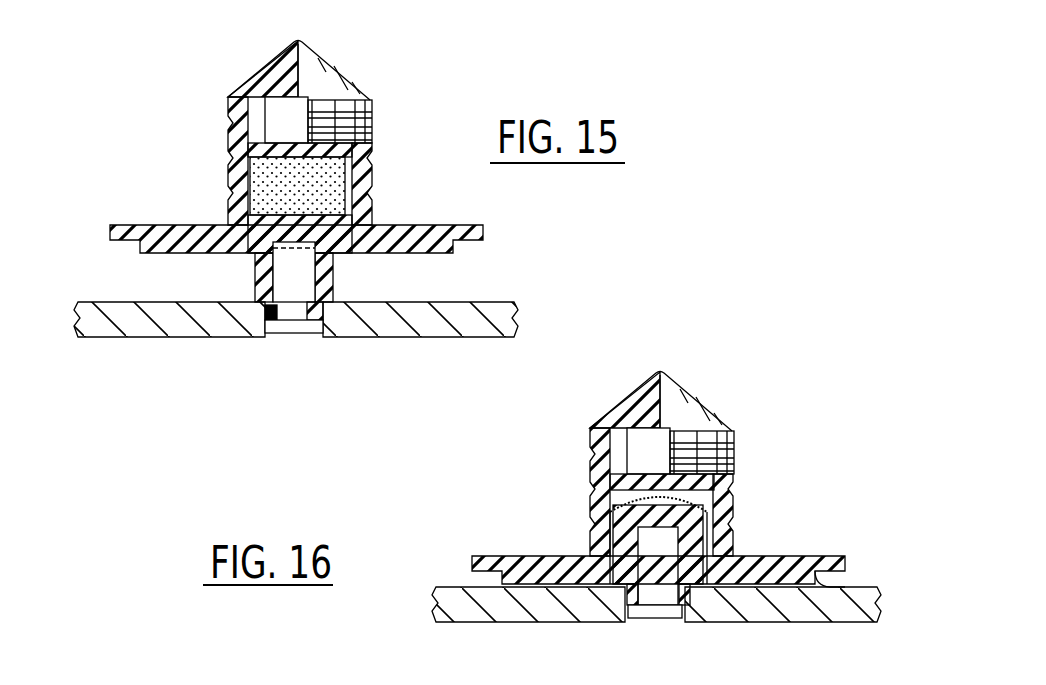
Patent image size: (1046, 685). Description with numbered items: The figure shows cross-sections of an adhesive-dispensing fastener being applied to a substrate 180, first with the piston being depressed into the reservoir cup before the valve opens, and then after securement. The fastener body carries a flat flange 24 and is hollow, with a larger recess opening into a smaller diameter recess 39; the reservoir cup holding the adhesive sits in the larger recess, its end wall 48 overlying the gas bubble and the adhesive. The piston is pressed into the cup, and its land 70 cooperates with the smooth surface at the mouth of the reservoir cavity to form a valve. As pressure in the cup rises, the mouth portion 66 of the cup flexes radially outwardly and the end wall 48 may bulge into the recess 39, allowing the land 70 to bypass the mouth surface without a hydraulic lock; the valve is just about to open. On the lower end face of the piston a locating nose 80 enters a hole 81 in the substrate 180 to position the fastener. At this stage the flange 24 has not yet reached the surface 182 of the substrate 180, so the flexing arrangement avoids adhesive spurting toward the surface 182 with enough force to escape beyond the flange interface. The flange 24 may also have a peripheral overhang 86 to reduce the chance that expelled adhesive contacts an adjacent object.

In FIG. 15, the end wall of the reservoir cup 48 is at (277, 147).
In FIG. 15, the smaller diameter recess 39 is at (288, 115).
In FIG. 15, the mouth portion of the reservoir cup 66 is at (262, 223).
In FIG. 15, the land 70 is at (340, 223).
In FIG. 15, the flange portion 24 is at (437, 240).
In FIG. 16, the flange portion 24 is at (779, 557).
In FIG. 15, the surface of the substrate 182 is at (415, 302).
In FIG. 15, the substrate 180 is at (163, 325).
In FIG. 16, the substrate 180 is at (475, 612).
In FIG. 15, the locating nose portion 80 is at (274, 318).
In FIG. 15, the hole in a substrate 81 is at (316, 333).
In FIG. 16, the peripheral overhang 86 is at (843, 590).